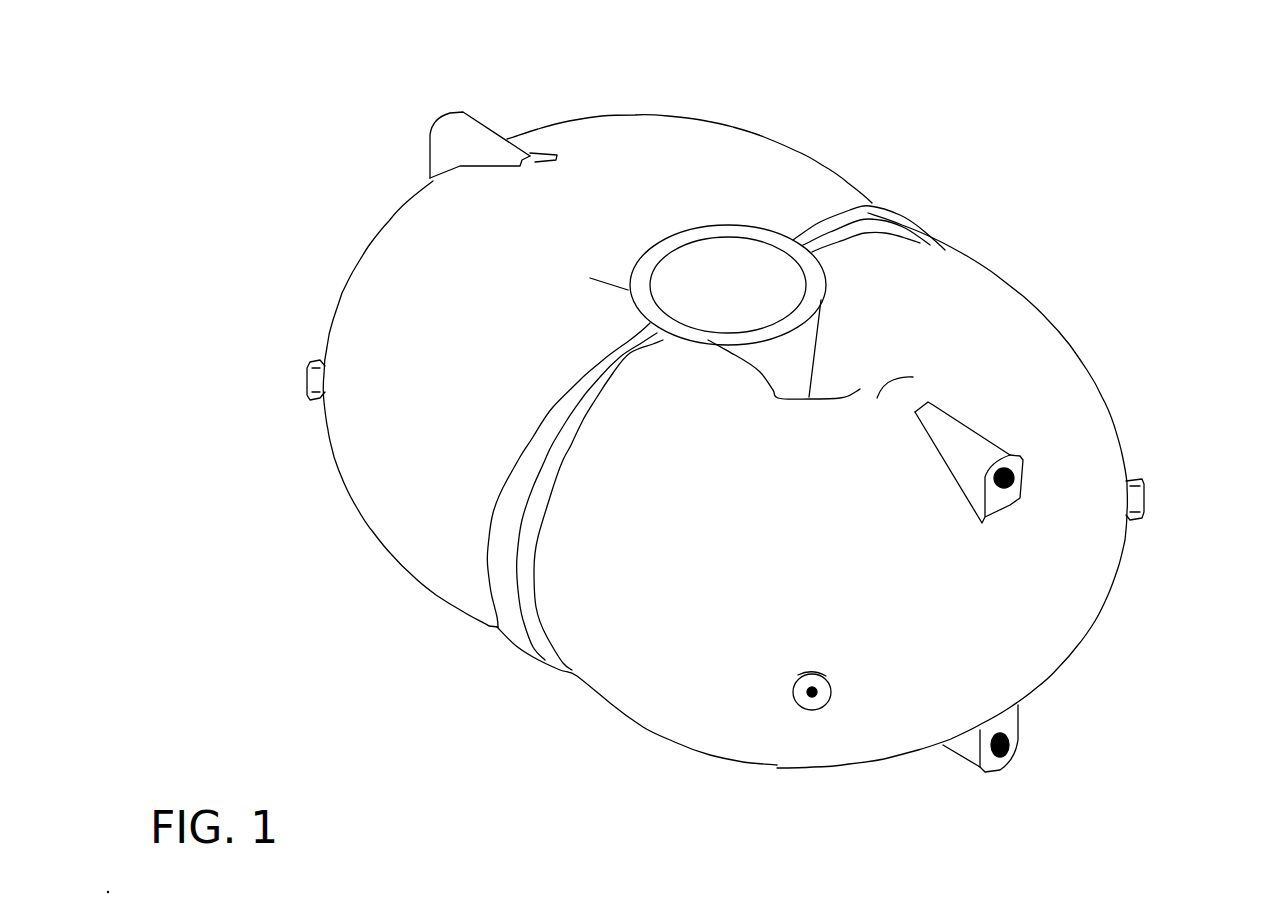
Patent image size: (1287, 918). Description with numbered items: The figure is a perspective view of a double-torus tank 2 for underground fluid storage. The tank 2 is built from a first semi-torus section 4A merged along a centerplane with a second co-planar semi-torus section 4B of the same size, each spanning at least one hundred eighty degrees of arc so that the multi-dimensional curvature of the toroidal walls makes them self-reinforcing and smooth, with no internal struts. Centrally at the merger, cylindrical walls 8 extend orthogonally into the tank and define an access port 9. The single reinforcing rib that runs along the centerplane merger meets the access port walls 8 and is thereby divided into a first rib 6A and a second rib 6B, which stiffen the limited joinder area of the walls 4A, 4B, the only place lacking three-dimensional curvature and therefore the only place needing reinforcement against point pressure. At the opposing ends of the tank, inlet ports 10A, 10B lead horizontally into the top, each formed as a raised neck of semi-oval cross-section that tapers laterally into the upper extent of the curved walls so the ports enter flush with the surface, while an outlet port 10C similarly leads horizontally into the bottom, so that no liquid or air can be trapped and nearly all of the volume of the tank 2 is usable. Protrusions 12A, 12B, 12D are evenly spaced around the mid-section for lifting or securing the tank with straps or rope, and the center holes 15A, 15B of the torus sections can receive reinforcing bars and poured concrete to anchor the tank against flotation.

The double-torus tank 2 is at (343, 144).
The first semi-torus section 4A is at (673, 162).
The second co-planar semi-torus section 4B is at (1013, 330).
The first rib 6A is at (555, 408).
The second rib 6B is at (863, 207).
The cylindrical walls 8 is at (822, 294).
The access port 9 is at (742, 305).
The inlet port 10A is at (467, 110).
The inlet port 10B is at (1010, 453).
The outlet port 10C is at (1020, 725).
The protrusion 12A is at (310, 381).
The protrusion 12B is at (811, 712).
The protrusion 12D is at (1146, 500).
The center hole 15A is at (620, 256).
The center hole 15B is at (835, 376).